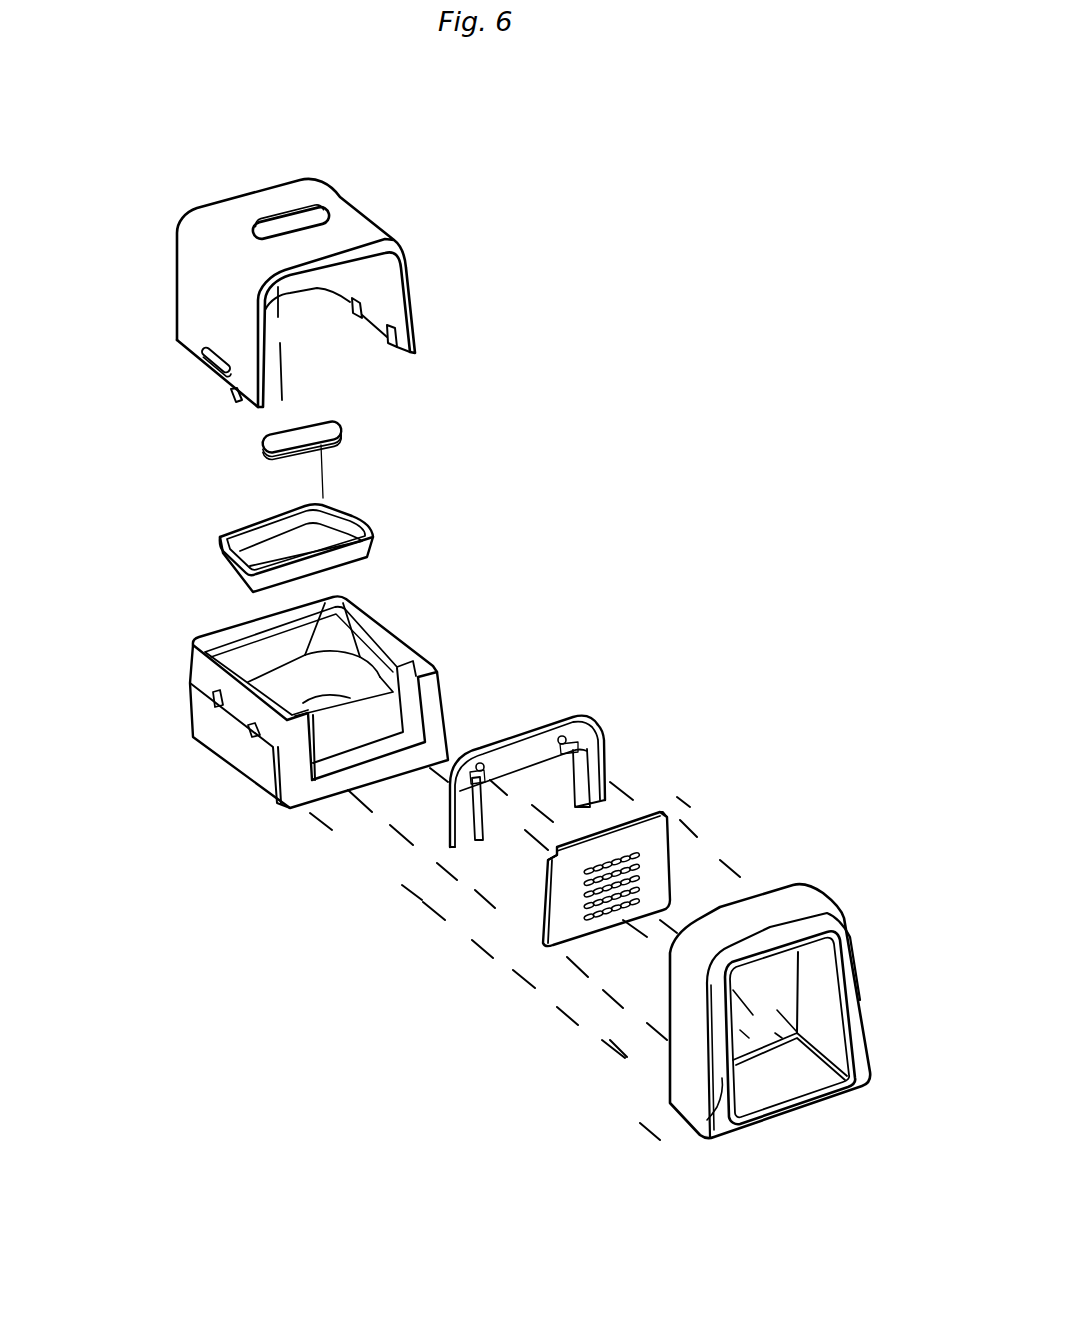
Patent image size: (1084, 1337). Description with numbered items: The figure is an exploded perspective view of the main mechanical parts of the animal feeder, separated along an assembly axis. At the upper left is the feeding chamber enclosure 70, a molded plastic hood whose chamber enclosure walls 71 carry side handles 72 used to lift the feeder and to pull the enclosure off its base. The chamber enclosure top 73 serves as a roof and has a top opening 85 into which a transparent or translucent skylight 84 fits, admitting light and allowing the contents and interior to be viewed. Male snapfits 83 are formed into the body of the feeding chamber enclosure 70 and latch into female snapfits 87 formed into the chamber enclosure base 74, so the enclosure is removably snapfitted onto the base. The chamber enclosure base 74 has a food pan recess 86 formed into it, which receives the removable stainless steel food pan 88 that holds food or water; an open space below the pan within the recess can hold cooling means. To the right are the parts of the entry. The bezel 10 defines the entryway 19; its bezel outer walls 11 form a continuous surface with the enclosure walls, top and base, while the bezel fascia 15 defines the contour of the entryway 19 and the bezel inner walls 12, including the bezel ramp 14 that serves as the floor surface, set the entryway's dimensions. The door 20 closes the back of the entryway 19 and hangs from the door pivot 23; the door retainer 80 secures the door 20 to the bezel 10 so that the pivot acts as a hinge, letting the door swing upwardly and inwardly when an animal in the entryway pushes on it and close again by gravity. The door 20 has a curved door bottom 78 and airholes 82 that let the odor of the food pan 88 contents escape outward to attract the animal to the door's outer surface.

The bezel 10 is at (730, 1002).
The bezel outer walls 11 is at (693, 1062).
The bezel inner walls 12 is at (817, 1010).
The bezel ramp 14 is at (760, 1087).
The bezel fascia 15 is at (712, 1090).
The entryway 19 is at (773, 988).
The door 20 is at (677, 807).
The door pivot 23 is at (663, 813).
The feeding chamber enclosure 70 is at (269, 274).
The chamber enclosure walls 71 is at (197, 297).
The side handles 72 is at (197, 363).
The chamber enclosure top 73 is at (302, 190).
The chamber enclosure base 74 is at (301, 693).
The curved door bottom 78 is at (535, 866).
The door retainer 80 is at (547, 712).
The airholes 82 is at (643, 878).
The male snapfits 83 is at (237, 397).
The skylight 84 is at (268, 447).
The top opening 85 is at (287, 229).
The food pan recess 86 is at (333, 677).
The female snapfits 87 is at (252, 728).
The food pan 88 is at (383, 556).